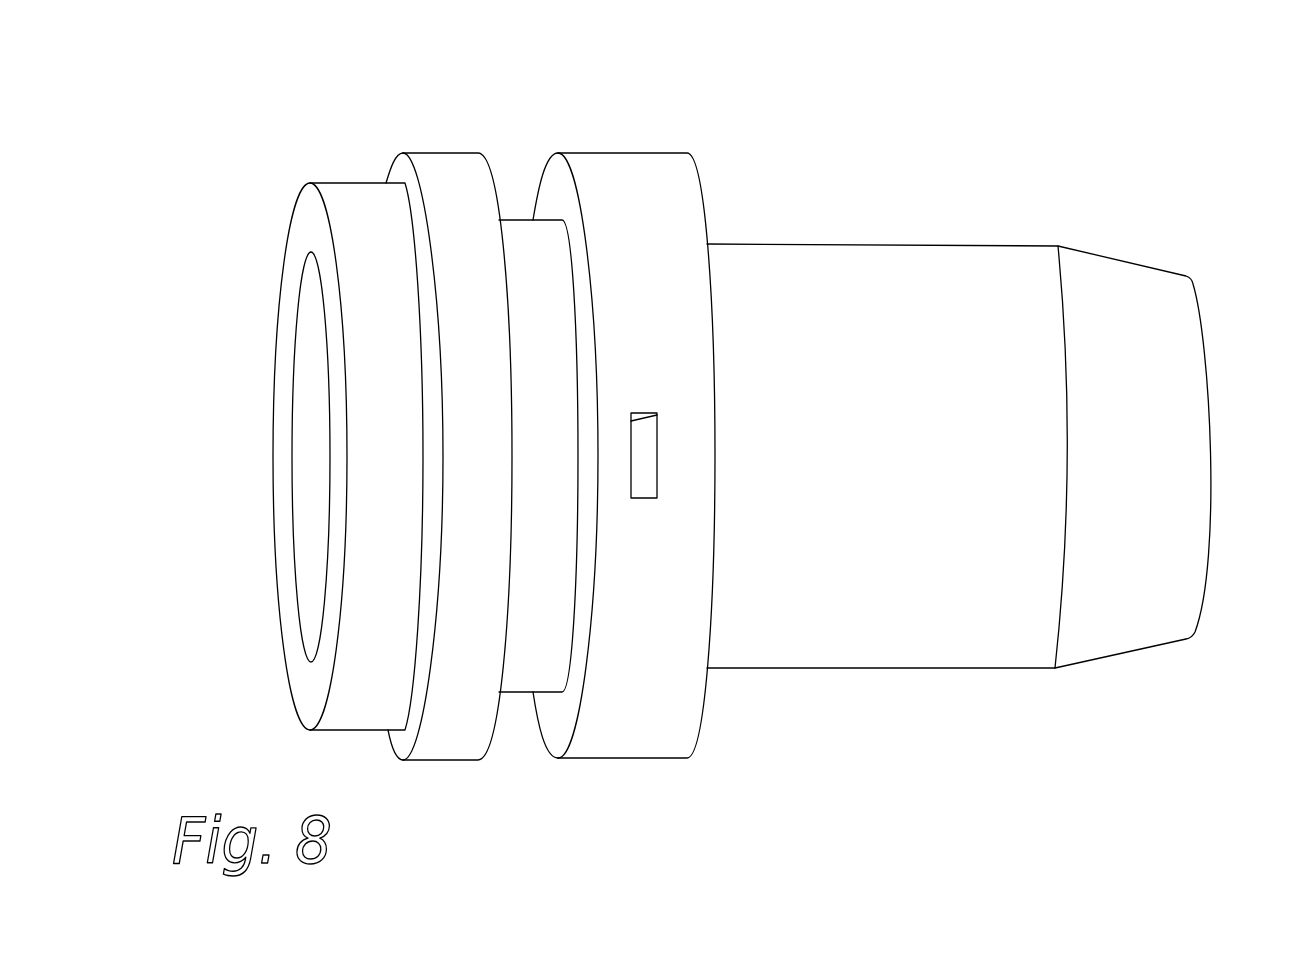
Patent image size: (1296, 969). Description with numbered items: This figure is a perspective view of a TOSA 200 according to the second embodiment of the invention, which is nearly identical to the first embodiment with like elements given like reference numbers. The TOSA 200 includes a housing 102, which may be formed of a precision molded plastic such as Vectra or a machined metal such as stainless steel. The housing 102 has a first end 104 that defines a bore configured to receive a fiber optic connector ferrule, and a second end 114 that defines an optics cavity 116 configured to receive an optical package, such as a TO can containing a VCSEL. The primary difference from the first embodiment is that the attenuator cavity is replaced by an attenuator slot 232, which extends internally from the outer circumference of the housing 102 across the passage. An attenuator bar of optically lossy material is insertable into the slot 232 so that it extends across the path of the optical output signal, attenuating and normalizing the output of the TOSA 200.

The TOSA 200 is at (743, 400).
The housing 102 is at (846, 243).
The first end 104 is at (1148, 262).
The second end 114 is at (372, 184).
The optics cavity 116 is at (313, 398).
The attenuator slot 232 is at (647, 452).